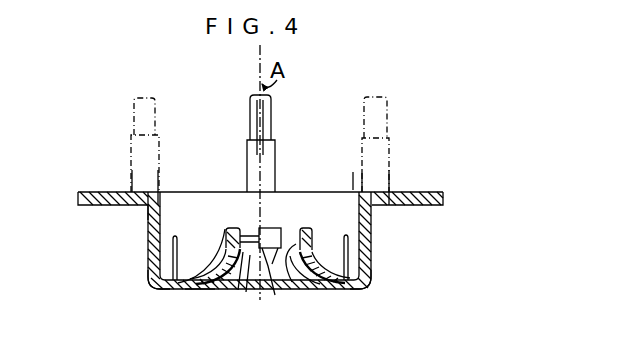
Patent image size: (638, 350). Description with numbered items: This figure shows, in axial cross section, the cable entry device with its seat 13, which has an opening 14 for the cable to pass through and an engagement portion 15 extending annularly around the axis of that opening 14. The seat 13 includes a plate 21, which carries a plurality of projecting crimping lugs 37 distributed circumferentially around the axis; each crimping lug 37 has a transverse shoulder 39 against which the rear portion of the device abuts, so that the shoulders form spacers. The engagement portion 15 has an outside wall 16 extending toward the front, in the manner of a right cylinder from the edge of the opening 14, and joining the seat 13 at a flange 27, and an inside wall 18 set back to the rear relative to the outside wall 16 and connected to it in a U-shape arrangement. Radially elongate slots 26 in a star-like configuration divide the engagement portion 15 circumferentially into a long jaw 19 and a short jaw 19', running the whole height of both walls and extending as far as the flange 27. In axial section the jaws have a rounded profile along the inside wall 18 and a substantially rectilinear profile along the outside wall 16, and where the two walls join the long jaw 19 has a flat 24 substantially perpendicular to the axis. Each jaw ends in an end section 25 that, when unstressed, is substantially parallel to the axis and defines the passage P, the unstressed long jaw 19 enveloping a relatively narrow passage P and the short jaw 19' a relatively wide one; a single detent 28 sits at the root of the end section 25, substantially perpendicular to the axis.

The seat 13 is at (410, 209).
The plate 21 is at (426, 192).
The outside wall 16 is at (146, 228).
The flange 27 is at (147, 212).
The flat 24 is at (172, 289).
The inside wall 18 is at (200, 292).
The engagement portion 15 is at (373, 285).
The crimping lug 37 is at (278, 139).
The transverse shoulder 39 is at (257, 122).
The opening 14 is at (353, 172).
The slot 26 is at (178, 240).
The detent 28 is at (262, 262).
The end section 25 is at (243, 229).
The long jaw 19 is at (238, 278).
The short jaw 19' is at (302, 291).
The passage P is at (245, 222).